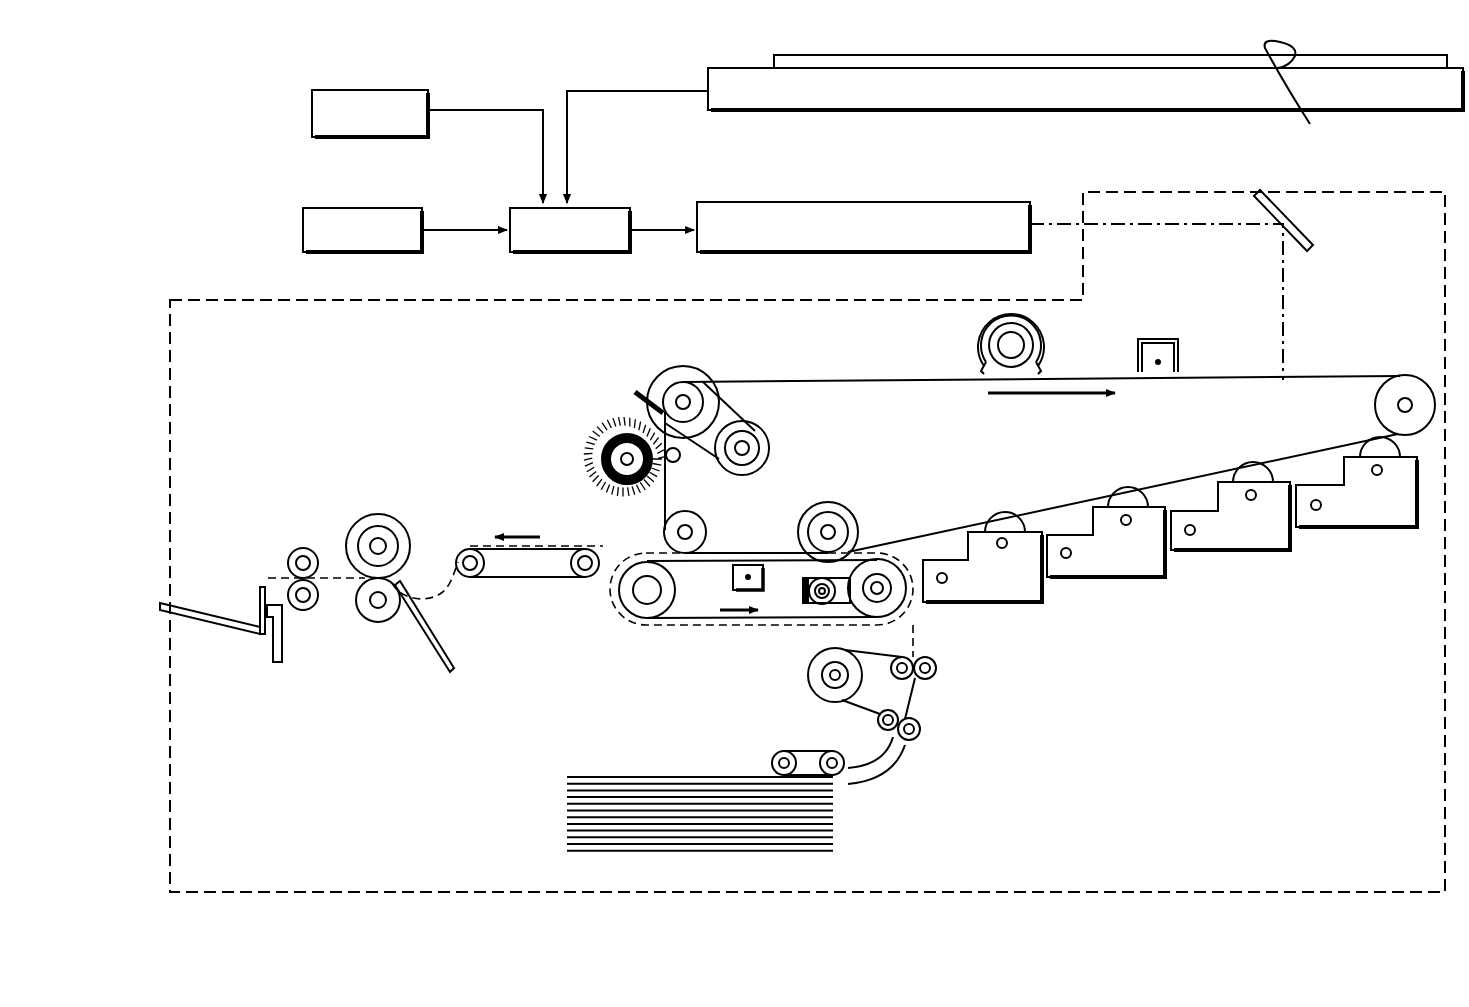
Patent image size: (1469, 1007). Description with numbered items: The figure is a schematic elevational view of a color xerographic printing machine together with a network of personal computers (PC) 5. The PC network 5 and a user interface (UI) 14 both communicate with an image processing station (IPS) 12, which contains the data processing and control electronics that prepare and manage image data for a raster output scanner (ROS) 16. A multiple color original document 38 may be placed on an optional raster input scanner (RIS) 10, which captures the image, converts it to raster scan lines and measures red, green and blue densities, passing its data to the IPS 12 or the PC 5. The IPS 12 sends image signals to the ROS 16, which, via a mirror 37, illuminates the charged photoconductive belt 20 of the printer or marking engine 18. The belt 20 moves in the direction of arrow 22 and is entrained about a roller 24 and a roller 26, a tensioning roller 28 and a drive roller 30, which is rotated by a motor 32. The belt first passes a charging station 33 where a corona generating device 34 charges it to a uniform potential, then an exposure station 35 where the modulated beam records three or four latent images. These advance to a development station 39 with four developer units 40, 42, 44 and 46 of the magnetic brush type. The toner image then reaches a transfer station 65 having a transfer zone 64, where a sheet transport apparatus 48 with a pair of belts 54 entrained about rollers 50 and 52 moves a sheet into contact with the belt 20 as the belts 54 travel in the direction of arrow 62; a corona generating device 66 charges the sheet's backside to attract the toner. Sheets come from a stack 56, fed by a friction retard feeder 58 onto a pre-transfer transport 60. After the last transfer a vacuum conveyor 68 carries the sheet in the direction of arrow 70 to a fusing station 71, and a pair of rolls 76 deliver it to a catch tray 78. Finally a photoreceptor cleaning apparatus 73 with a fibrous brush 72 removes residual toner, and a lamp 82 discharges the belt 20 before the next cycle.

The personal computers (PC) network 5 is at (282, 105).
The raster input scanner (RIS) 10 is at (694, 78).
The image processing station (IPS) 12 is at (628, 194).
The user interface (UI) 14 is at (297, 196).
The raster output scanner (ROS) 16 is at (905, 192).
The printer or marking engine 18 is at (1443, 164).
The photoconductive belt 20 is at (1096, 378).
The arrow (direction of belt movement) 22 is at (1055, 397).
The roller 24 is at (700, 522).
The roller 26 is at (850, 512).
The tensioning roller 28 is at (1406, 393).
The drive roller 30 is at (666, 378).
The motor 32 is at (767, 446).
The charging station 33 is at (1193, 332).
The corona generating device 34 is at (1166, 337).
The exposure station 35 is at (1302, 367).
The mirror 37 is at (1305, 237).
The original document 38 is at (1295, 95).
The development station 39 is at (1206, 604).
The developer unit 40 is at (1378, 522).
The developer unit 42 is at (1248, 545).
The developer unit 44 is at (1120, 572).
The developer unit 46 is at (998, 597).
The sheet transport apparatus 48 is at (680, 648).
The roller 50 is at (643, 612).
The roller 52 is at (908, 612).
The belts 54 is at (660, 563).
The stack of sheets 56 is at (600, 786).
The friction retard feeder 58 is at (808, 752).
The pre-transfer transport 60 is at (925, 702).
The arrow (direction of belt movement) 62 is at (741, 615).
The transfer zone 64 is at (758, 541).
The transfer station 65 is at (776, 571).
The corona generating device 66 is at (733, 582).
The vacuum conveyor 68 is at (531, 580).
The arrow (direction of sheet movement) 70 is at (535, 533).
The fusing station 71 is at (372, 513).
The fibrous brush 72 is at (606, 443).
The photoreceptor cleaning apparatus 73 is at (608, 406).
The pair of rolls 76 is at (305, 548).
The catch tray 78 is at (223, 628).
The lamp 82 is at (983, 348).